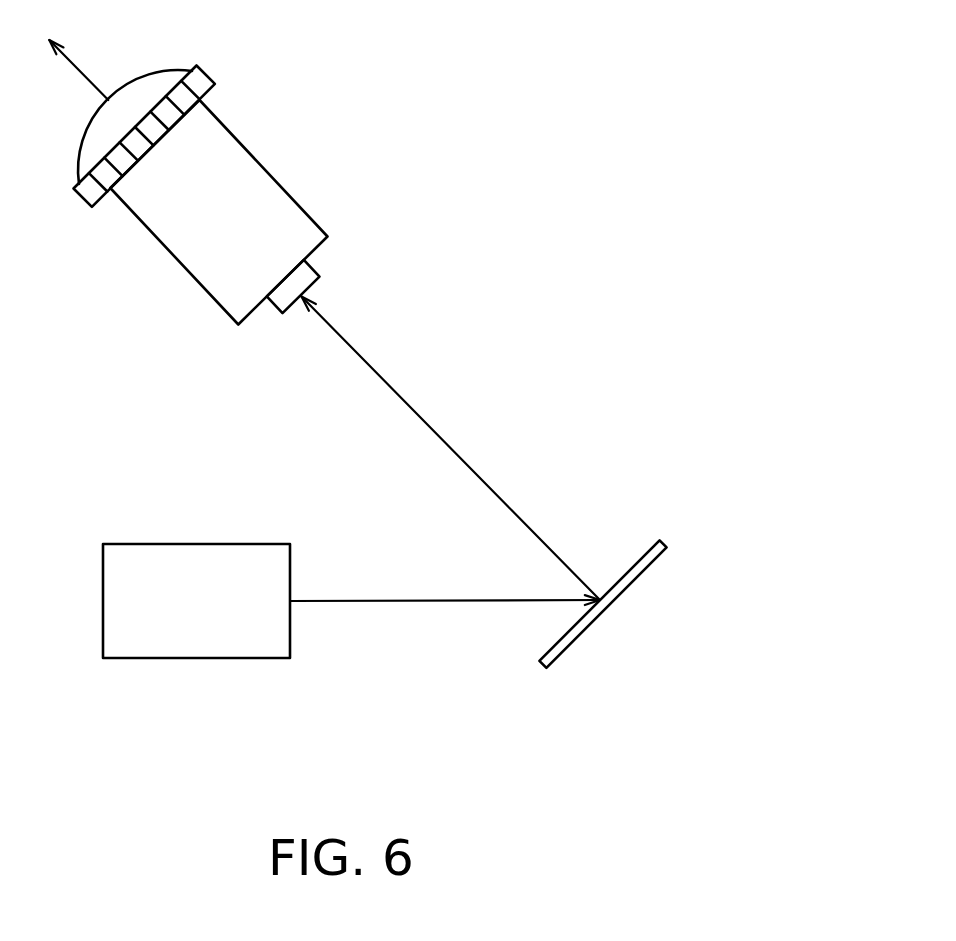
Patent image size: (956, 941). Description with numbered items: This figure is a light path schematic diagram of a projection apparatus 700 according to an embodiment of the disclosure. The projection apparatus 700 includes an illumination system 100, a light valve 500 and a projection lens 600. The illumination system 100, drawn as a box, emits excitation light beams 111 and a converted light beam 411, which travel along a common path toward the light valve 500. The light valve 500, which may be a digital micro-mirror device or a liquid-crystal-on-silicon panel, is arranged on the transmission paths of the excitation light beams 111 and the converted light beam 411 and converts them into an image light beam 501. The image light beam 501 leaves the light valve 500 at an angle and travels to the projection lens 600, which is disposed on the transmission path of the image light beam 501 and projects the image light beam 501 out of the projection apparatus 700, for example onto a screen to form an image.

The illumination system 100 is at (195, 658).
The excitation light beams 111 is at (445, 637).
The converted light beam 411 is at (443, 603).
The light valve 500 is at (569, 644).
The image light beam 501 is at (455, 452).
The projection lens 600 is at (243, 173).
The projection apparatus 700 is at (693, 768).